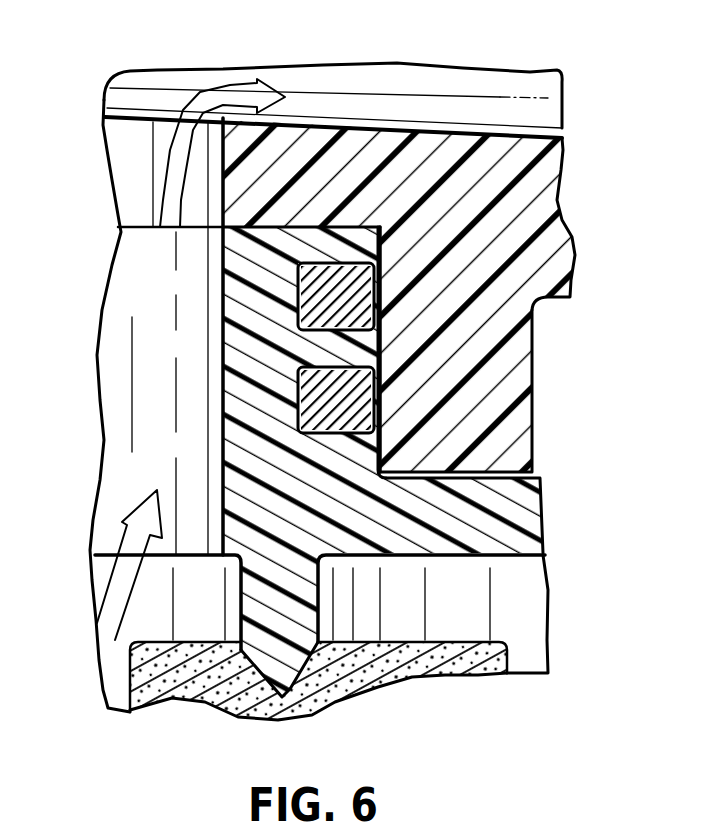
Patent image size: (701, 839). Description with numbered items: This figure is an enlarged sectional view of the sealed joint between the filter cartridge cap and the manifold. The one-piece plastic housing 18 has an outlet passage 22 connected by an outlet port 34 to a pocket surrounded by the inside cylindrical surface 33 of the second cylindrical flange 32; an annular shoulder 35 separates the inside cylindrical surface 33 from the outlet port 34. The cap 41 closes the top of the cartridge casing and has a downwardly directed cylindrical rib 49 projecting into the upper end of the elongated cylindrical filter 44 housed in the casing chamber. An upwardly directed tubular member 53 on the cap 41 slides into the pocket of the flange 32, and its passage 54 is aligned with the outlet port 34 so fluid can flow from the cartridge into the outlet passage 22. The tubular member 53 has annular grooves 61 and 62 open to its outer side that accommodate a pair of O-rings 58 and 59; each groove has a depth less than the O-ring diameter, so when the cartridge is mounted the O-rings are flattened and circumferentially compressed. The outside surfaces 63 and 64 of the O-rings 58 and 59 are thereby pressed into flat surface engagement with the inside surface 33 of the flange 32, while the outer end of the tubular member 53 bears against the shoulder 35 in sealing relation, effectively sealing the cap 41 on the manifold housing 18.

The housing 18 is at (535, 181).
The outlet passage 22 is at (428, 98).
The second cylindrical flange 32 is at (507, 351).
The inside cylindrical surface 33 is at (392, 244).
The outlet port 34 is at (132, 162).
The annular shoulder 35 is at (268, 228).
The cap 41 is at (512, 518).
The filter 44 is at (130, 676).
The cylindrical rib 49 is at (327, 703).
The tubular member 53 is at (240, 303).
The passage 54 is at (129, 478).
The O-ring 58 is at (378, 284).
The O-ring 59 is at (392, 384).
The annular groove 61 is at (227, 346).
The annular groove 62 is at (292, 424).
The outside surface 63 is at (360, 298).
The outside surface 64 is at (372, 395).